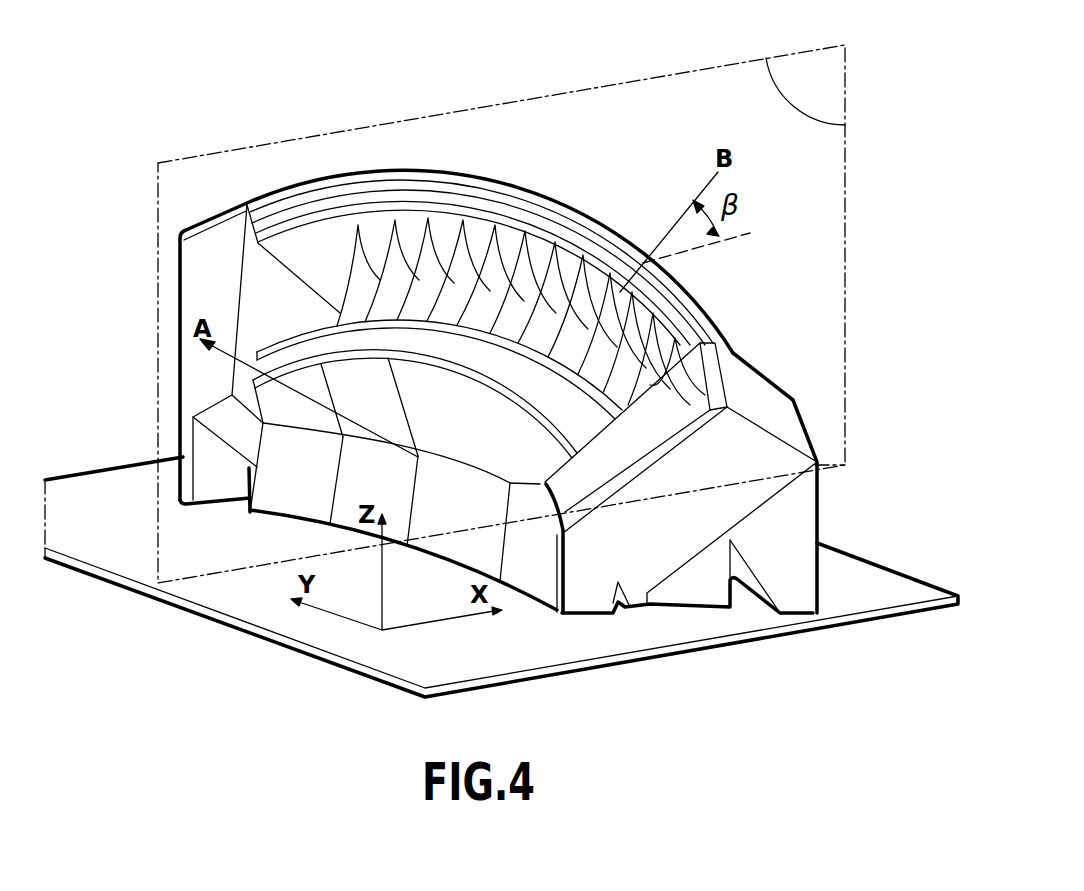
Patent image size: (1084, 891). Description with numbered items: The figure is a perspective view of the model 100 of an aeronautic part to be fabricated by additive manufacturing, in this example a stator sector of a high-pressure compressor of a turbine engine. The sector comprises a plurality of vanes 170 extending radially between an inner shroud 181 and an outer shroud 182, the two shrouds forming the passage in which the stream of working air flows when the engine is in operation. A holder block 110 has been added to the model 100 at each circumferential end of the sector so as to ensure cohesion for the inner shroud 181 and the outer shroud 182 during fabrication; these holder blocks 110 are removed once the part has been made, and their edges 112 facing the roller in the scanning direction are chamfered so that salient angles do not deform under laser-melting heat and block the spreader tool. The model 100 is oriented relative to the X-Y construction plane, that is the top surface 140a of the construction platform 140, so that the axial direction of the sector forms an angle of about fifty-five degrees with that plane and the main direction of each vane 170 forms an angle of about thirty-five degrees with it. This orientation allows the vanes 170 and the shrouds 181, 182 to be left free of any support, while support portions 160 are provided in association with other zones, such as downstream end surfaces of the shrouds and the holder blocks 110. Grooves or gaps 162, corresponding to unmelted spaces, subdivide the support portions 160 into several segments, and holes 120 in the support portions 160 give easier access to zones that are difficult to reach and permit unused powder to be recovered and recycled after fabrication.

The model 100 is at (213, 186).
The holder block 110 is at (212, 277).
The edges of the holder blocks 112 is at (712, 410).
The holes 120 is at (755, 590).
The construction platform 140 is at (230, 625).
The top surface of the construction platform 140a is at (108, 488).
The support portions 160 is at (442, 422).
The grooves or gaps 162 is at (335, 497).
The vanes 170 is at (553, 270).
The inner shroud 181 is at (585, 415).
The outer shroud 182 is at (323, 230).